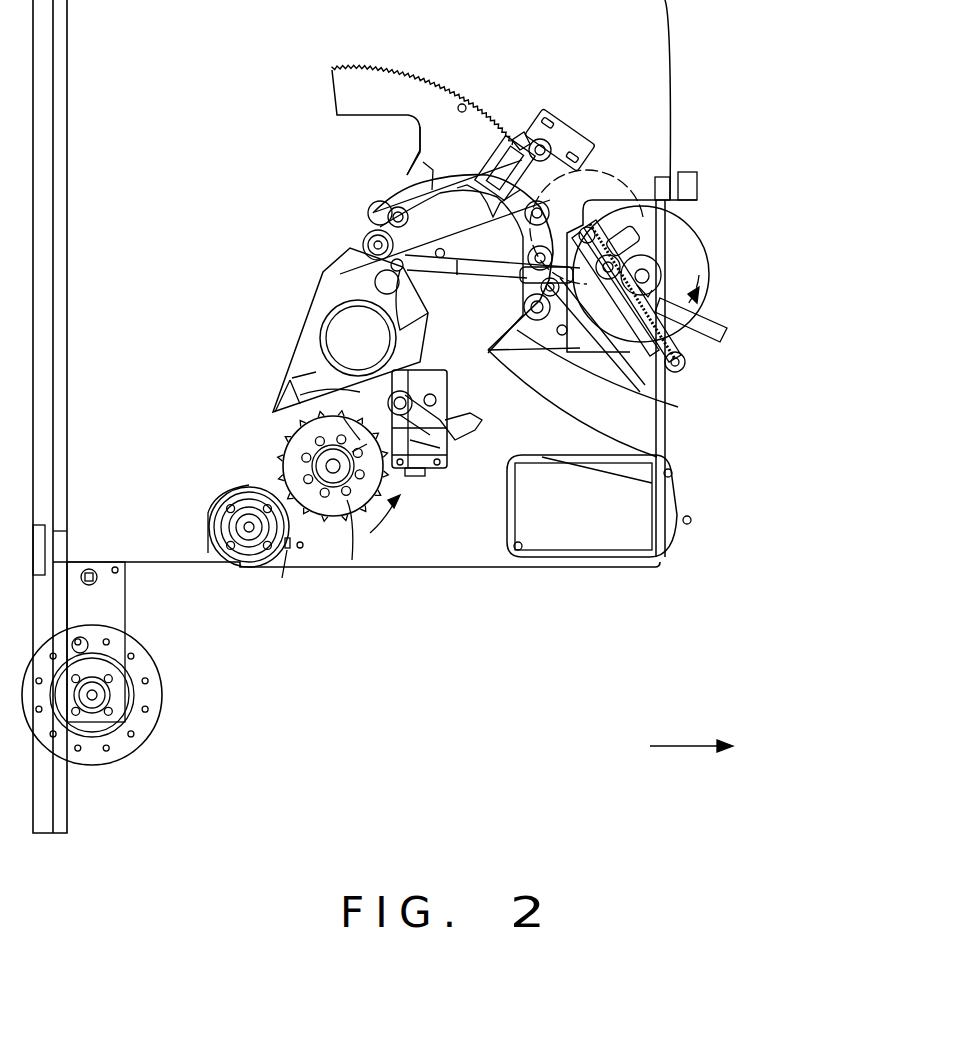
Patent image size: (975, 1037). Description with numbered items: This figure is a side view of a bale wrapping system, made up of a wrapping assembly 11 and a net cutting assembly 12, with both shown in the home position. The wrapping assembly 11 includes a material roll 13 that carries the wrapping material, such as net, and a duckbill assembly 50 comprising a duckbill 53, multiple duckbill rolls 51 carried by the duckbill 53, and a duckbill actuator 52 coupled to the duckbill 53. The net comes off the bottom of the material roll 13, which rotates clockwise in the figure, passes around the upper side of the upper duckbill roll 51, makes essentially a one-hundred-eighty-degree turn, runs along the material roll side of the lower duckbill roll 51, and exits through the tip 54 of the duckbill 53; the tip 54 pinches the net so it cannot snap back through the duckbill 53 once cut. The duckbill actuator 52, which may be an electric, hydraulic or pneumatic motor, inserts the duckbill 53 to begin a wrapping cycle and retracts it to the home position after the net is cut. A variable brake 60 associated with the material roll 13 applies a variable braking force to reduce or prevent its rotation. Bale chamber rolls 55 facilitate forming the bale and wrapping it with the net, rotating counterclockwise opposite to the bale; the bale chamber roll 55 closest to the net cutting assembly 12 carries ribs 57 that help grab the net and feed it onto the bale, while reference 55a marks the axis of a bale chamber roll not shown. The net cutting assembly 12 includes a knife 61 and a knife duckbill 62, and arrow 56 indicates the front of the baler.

The wrapping assembly 11 is at (540, 74).
The net cutting assembly 12 is at (428, 482).
The material roll 13 is at (709, 263).
The duckbill assembly 50 is at (524, 252).
The duckbill rolls 51 is at (557, 197).
The duckbill actuator 52 is at (507, 167).
The duckbill 53 is at (555, 320).
The tip 54 is at (470, 398).
The bale chamber rolls 55 is at (335, 503).
The axis of a bale chamber roll 55a is at (360, 340).
The arrow 56 is at (693, 747).
The ribs 57 is at (318, 520).
The variable brake 60 is at (710, 288).
The knife 61 is at (492, 423).
The knife duckbill 62 is at (473, 367).